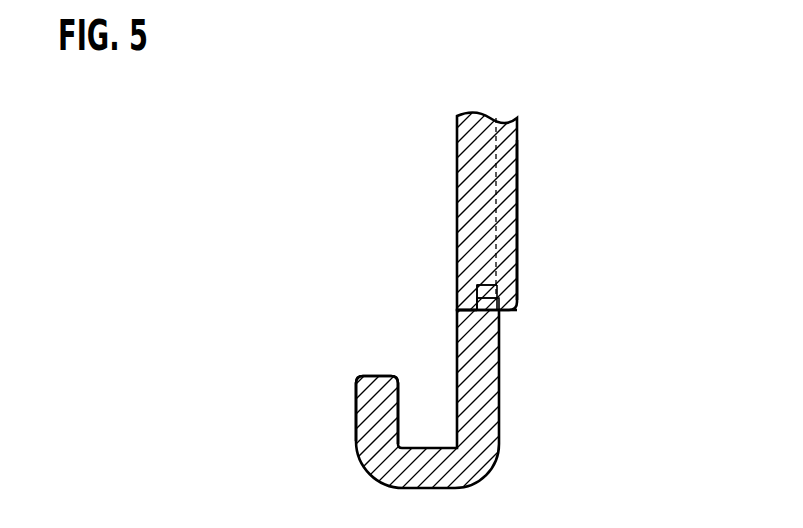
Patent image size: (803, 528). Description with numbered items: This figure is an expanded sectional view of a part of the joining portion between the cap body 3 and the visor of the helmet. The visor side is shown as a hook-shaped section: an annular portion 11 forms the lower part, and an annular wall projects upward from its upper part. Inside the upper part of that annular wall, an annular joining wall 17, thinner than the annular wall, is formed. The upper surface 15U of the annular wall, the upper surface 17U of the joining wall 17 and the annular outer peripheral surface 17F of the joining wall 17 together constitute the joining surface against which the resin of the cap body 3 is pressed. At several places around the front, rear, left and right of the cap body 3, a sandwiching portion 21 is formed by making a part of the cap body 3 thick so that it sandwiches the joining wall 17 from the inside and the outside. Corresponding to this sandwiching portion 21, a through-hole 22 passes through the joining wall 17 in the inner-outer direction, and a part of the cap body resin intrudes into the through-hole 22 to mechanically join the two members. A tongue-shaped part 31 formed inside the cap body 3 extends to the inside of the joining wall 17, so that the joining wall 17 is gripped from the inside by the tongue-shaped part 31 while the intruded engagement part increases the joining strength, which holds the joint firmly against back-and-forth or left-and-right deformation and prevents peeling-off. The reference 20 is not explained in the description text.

The cap body 3 is at (473, 150).
The tongue-shaped part 31 is at (507, 200).
The joining wall 17 is at (519, 282).
The upper surface of the joining wall 17U is at (478, 270).
The outer peripheral surface of the joining wall 17F is at (477, 293).
The annular portion 11 is at (486, 376).
The upper surface of the annular wall 15U is at (460, 308).
The hook tip portion 20 is at (367, 390).
The sandwiching portion 21 is at (555, 290).
The through-hole 22 is at (517, 305).